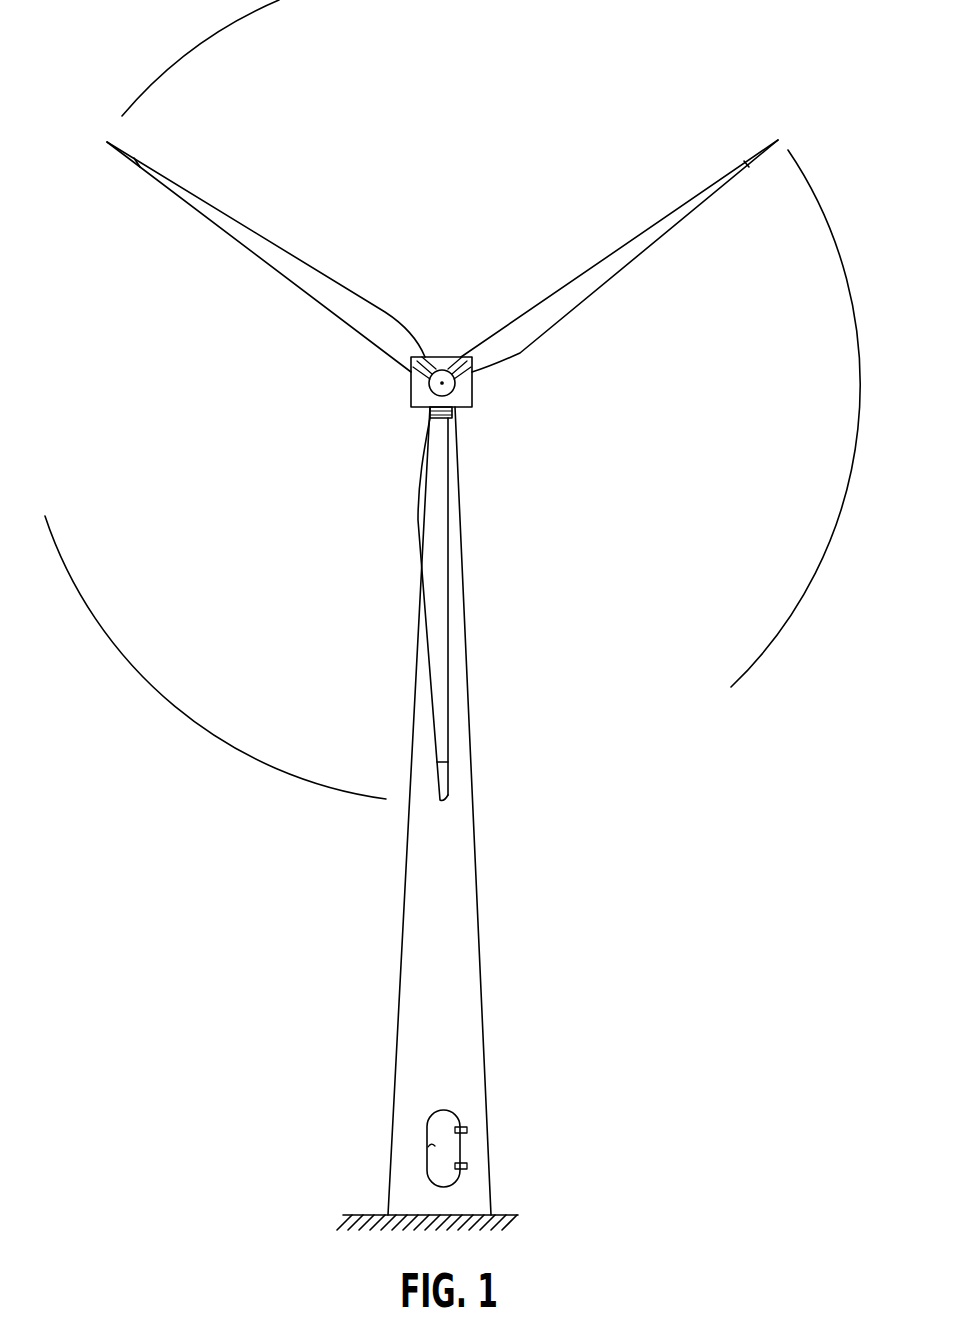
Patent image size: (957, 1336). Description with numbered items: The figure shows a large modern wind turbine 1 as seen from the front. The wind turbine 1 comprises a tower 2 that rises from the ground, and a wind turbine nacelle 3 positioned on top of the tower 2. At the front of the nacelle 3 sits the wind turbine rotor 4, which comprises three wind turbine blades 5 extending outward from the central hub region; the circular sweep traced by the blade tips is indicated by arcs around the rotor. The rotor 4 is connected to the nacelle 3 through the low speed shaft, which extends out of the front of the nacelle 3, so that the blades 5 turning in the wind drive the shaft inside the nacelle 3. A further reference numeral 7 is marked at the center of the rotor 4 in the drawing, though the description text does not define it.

The wind turbine 1 is at (361, 1058).
The tower 2 is at (470, 895).
The wind turbine nacelle 3 is at (471, 406).
The wind turbine rotor 4 is at (429, 381).
The wind turbine blades 5 is at (442, 645).
The rotor axis 7 is at (441, 381).